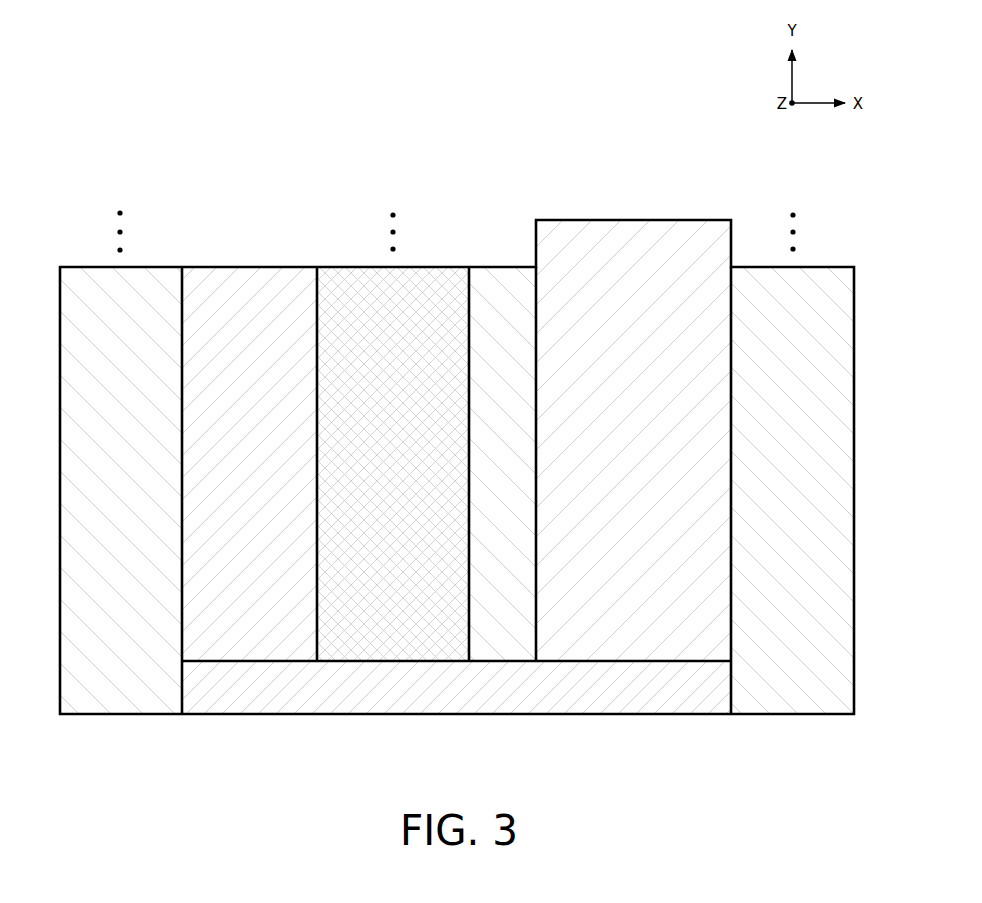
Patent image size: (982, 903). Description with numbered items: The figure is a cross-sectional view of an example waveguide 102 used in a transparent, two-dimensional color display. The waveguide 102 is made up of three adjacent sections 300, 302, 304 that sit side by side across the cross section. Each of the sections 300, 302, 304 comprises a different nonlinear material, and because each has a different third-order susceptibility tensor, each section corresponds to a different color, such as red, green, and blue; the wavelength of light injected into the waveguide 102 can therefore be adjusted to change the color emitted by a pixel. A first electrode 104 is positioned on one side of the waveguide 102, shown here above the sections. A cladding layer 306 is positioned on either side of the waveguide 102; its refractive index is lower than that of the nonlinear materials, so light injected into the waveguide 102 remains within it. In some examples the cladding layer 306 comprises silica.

The waveguide 102 is at (98, 132).
The first electrode 104 is at (637, 220).
The first section 300 is at (267, 267).
The second section 302 is at (362, 267).
The third section 304 is at (493, 267).
The cladding layer 306 is at (88, 267).